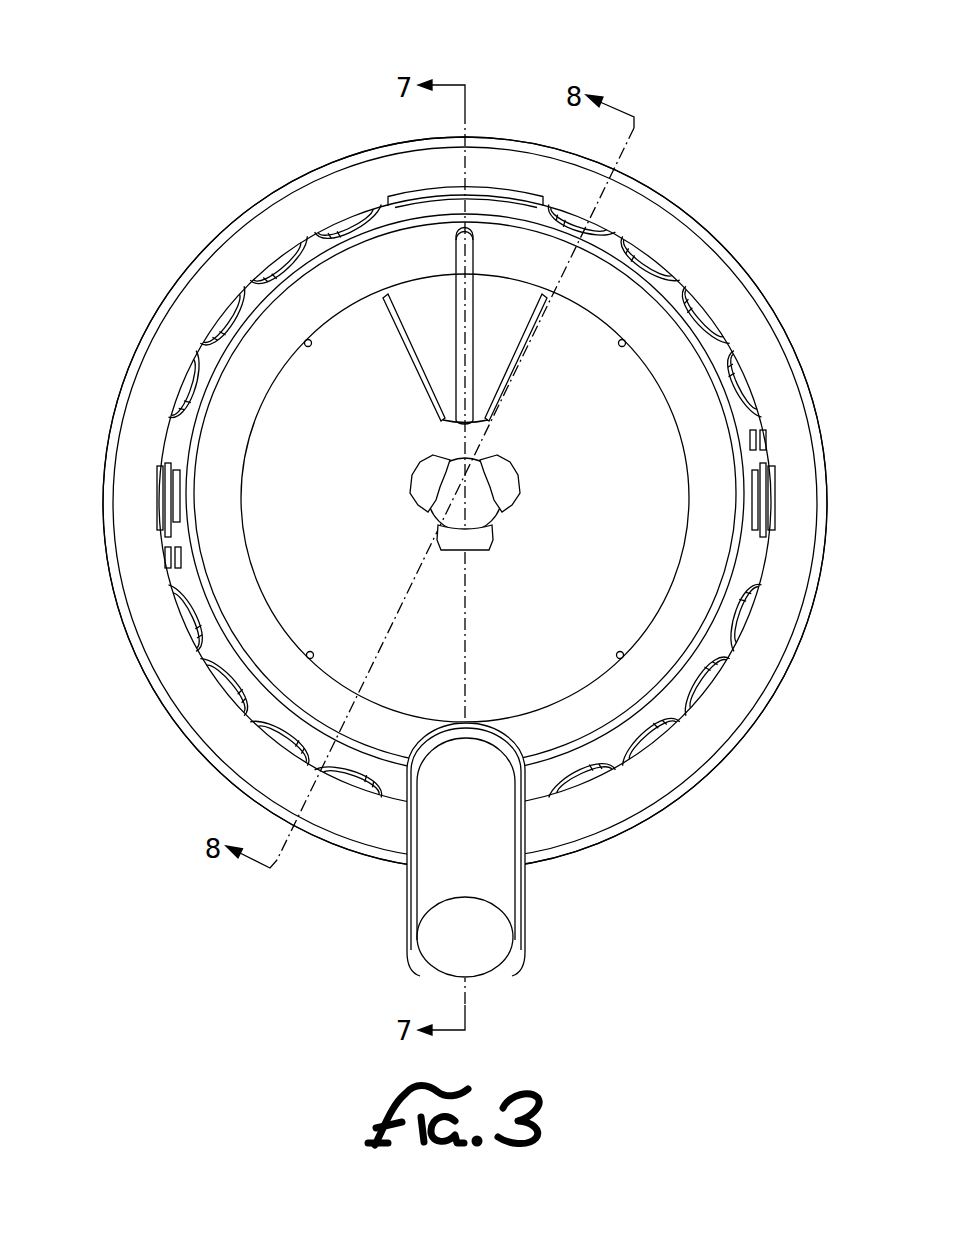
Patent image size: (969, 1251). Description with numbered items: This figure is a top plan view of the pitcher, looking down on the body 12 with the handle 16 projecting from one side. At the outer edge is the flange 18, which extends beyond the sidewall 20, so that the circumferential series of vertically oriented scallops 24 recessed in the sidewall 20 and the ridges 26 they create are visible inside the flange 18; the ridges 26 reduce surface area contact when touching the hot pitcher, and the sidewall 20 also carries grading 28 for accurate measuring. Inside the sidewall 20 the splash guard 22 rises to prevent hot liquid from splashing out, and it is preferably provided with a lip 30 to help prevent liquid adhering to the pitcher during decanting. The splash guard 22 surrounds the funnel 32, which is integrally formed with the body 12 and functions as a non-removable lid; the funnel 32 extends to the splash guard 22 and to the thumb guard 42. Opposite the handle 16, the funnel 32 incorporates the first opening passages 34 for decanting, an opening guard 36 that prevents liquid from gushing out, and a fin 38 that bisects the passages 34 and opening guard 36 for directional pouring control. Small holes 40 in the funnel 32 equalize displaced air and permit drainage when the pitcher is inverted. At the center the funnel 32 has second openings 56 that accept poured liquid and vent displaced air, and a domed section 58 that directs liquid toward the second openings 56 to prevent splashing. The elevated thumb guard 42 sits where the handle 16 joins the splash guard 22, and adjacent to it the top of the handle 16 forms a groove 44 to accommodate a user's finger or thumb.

The body 12 is at (232, 62).
The handle 16 is at (407, 915).
The flange 18 is at (208, 297).
The sidewall 20 is at (178, 442).
The splash guard 22 is at (612, 297).
The scallops 24 is at (698, 313).
The ridges 26 is at (730, 347).
The grading 28 is at (792, 496).
The lip 30 is at (435, 213).
The funnel 32 is at (340, 502).
The first opening passages 34 is at (411, 330).
The opening guard 36 is at (512, 322).
The fin 38 is at (478, 252).
The small holes 40 is at (300, 665).
The thumb guard 42 is at (487, 748).
The groove 44 is at (488, 876).
The second openings 56 is at (505, 478).
The domed section 58 is at (482, 503).